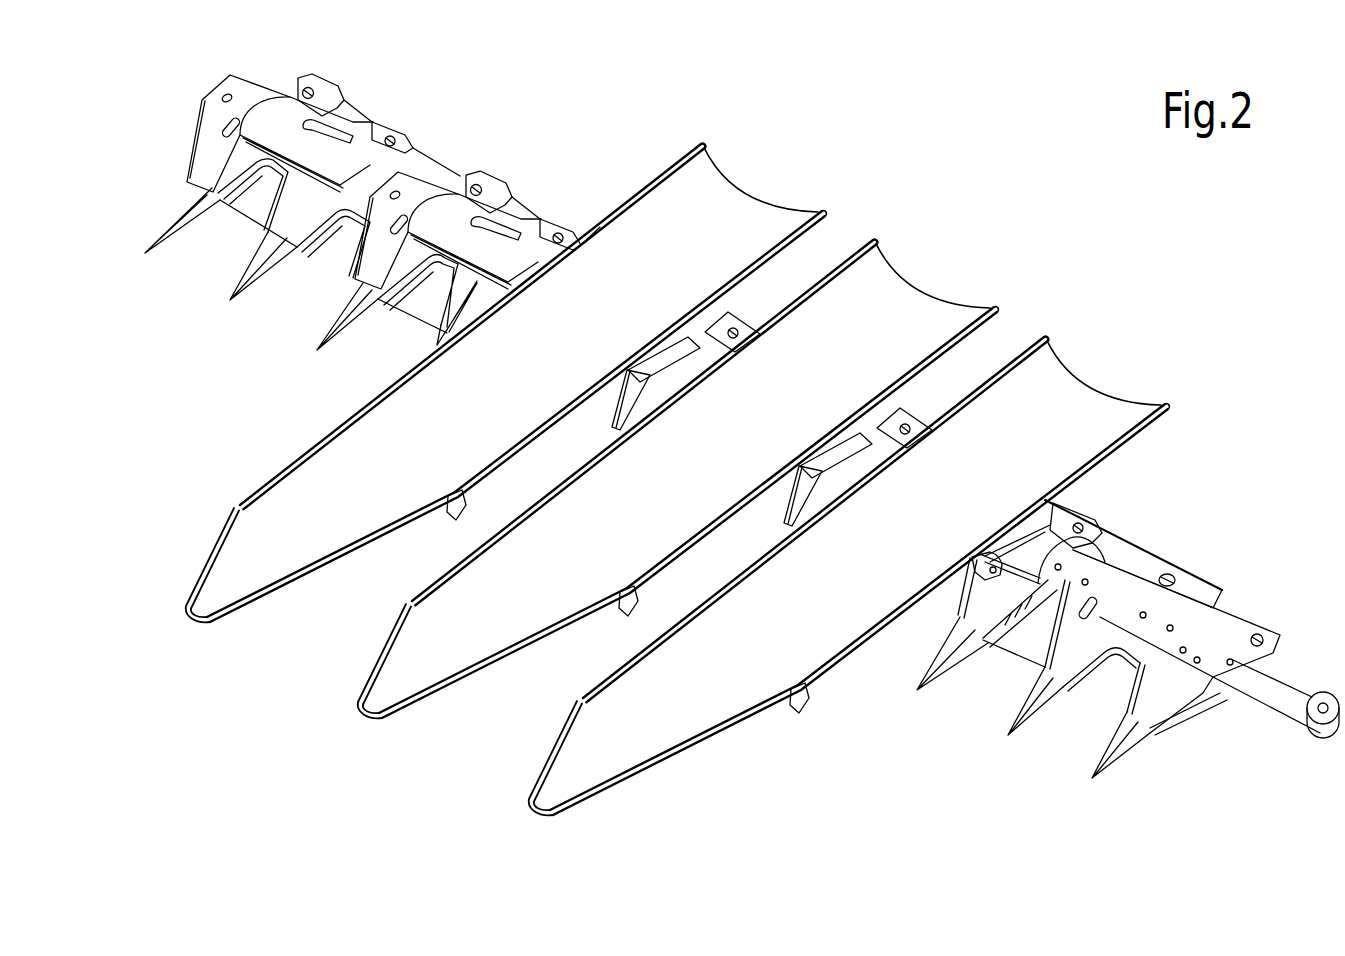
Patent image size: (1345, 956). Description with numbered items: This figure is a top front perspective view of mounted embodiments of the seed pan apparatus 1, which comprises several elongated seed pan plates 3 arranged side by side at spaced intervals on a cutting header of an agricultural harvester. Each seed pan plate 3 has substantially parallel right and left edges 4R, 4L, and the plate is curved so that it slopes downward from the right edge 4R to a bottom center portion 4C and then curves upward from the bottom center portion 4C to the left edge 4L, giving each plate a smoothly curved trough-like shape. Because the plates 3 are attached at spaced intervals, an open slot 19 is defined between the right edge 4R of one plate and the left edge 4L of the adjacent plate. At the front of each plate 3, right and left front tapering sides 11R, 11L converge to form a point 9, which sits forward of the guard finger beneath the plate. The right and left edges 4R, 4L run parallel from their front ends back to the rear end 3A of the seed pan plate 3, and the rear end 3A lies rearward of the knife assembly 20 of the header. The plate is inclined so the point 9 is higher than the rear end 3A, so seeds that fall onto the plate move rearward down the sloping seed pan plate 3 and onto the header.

The seed pan apparatus 1 is at (780, 158).
The rear end of the seed pan plate 3A is at (926, 290).
The seed pan plate 3 is at (1140, 437).
The open slot 19 is at (990, 345).
The right edge 4R is at (407, 368).
The left edge 4L is at (497, 473).
The bottom center portion 4C is at (452, 412).
The right front tapering side 11R is at (383, 650).
The left front tapering side 11L is at (456, 690).
The point 9 is at (360, 721).
The knife assembly 20 is at (1193, 747).